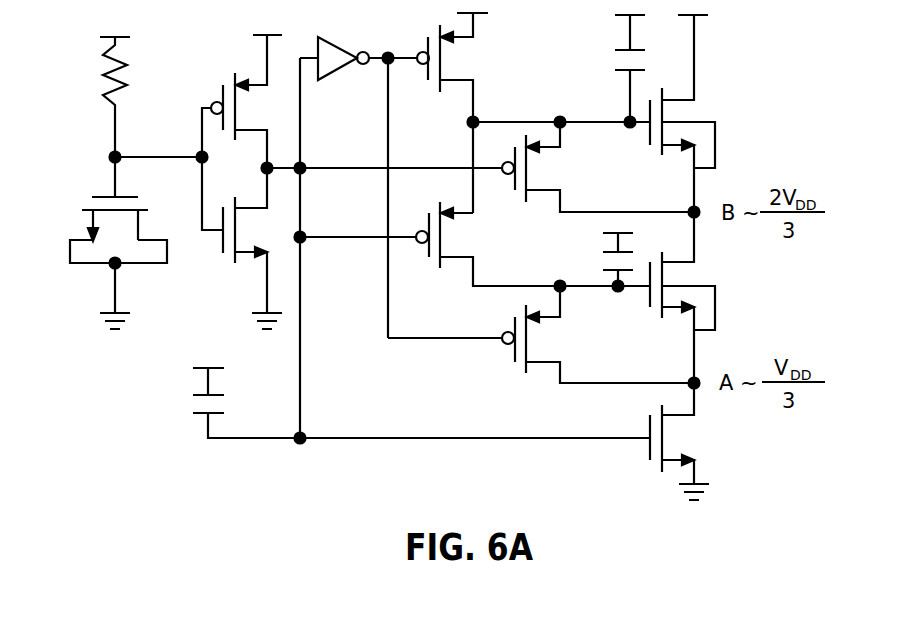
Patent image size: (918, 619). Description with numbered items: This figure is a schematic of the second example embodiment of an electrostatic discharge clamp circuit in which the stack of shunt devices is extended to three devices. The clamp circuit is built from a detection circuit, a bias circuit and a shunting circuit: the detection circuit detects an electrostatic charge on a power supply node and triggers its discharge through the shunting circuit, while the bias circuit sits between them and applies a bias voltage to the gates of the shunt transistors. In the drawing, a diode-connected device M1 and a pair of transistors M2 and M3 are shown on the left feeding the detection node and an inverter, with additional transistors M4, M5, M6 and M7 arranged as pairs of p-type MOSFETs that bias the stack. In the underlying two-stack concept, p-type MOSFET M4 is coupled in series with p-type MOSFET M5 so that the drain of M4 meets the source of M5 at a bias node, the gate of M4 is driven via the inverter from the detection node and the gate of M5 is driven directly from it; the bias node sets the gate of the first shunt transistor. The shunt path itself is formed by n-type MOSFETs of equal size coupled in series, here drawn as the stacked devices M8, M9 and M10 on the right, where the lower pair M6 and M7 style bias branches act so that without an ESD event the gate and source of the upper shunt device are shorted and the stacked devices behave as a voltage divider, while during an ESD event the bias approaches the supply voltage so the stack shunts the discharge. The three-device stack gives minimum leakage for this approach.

The diode-connected transistor M1 is at (121, 243).
The PMOS transistor M2 is at (242, 101).
The NMOS transistor M3 is at (242, 243).
The p-type MOSFET M4 is at (454, 67).
The p-type MOSFET M5 is at (497, 167).
The shunt transistor M6 is at (475, 244).
The shunt transistor M7 is at (541, 334).
The NMOS transistor M8 is at (695, 113).
The NMOS transistor M9 is at (695, 297).
The NMOS transistor M10 is at (686, 441).